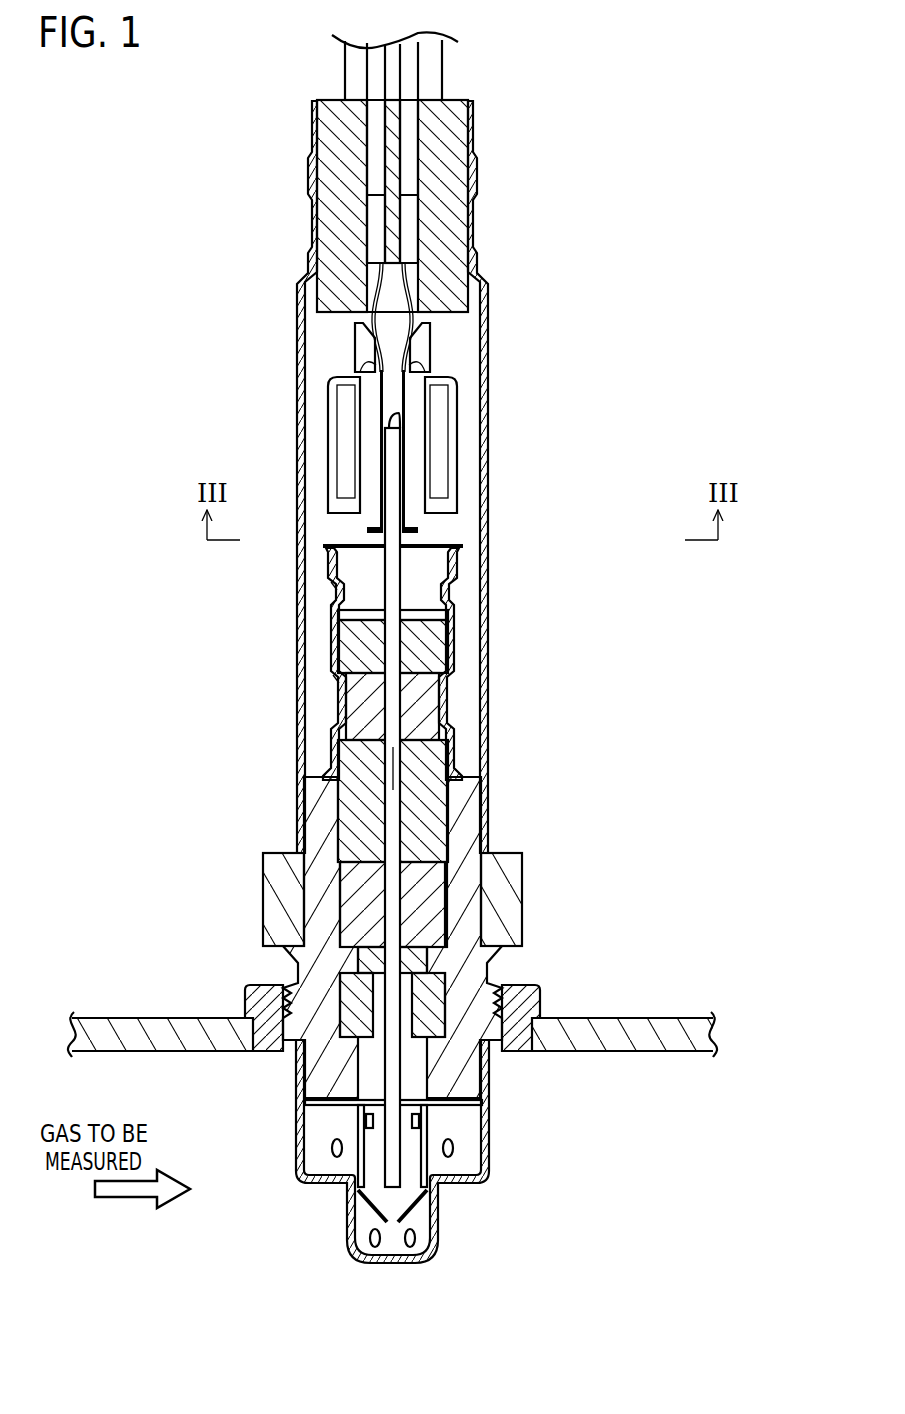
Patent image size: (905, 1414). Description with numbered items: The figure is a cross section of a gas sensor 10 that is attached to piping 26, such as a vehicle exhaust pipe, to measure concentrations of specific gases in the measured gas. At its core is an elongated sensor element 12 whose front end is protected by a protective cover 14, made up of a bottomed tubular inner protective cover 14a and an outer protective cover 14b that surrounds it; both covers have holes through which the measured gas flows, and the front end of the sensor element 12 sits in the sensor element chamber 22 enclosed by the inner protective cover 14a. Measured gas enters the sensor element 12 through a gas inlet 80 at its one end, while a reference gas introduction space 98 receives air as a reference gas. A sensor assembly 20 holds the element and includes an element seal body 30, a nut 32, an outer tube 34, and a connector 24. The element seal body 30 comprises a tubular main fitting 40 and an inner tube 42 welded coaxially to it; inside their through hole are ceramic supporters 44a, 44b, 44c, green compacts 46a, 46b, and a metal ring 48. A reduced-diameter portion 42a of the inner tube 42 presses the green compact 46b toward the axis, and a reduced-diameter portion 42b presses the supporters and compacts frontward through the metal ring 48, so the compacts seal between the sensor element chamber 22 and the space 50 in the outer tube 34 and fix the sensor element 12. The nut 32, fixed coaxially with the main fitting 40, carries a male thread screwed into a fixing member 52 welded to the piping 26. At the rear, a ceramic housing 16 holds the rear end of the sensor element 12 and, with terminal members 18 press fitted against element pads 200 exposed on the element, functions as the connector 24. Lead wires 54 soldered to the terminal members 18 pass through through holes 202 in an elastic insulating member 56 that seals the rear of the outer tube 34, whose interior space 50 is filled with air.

The gas sensor 10 is at (585, 195).
The sensor element 12 is at (392, 822).
The protective cover 14 is at (553, 1105).
The inner protective cover 14a is at (432, 1130).
The outer protective cover 14b is at (492, 1155).
The ceramic housing 16 is at (460, 480).
The terminal members 18 is at (372, 362).
The sensor assembly 20 is at (640, 452).
The sensor element chamber 22 is at (413, 1175).
The connector 24 is at (325, 418).
The piping 26 is at (128, 1030).
The element seal body 30 is at (588, 553).
The nut 32 is at (519, 948).
The outer tube 34 is at (488, 539).
The main fitting 40 is at (457, 887).
The inner tube 42 is at (455, 572).
The reduced-diameter portion 42a is at (335, 698).
The reduced-diameter portion 42b is at (333, 590).
The ceramic supporter 44a is at (417, 952).
The ceramic supporter 44b is at (437, 766).
The ceramic supporter 44c is at (432, 645).
The green compact 46a is at (422, 873).
The green compact 46b is at (433, 689).
The metal ring 48 is at (455, 612).
The space 50 is at (465, 341).
The fixing member 52 is at (267, 998).
The lead wires 54 is at (377, 148).
The elastic insulating member 56 is at (450, 242).
The gas inlet 80 is at (391, 1190).
The reference gas introduction space 98 is at (401, 416).
The element pads 200 is at (406, 447).
The through holes 202 is at (408, 200).